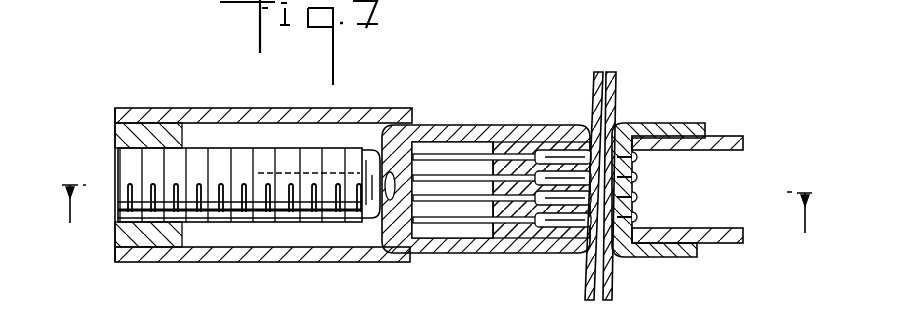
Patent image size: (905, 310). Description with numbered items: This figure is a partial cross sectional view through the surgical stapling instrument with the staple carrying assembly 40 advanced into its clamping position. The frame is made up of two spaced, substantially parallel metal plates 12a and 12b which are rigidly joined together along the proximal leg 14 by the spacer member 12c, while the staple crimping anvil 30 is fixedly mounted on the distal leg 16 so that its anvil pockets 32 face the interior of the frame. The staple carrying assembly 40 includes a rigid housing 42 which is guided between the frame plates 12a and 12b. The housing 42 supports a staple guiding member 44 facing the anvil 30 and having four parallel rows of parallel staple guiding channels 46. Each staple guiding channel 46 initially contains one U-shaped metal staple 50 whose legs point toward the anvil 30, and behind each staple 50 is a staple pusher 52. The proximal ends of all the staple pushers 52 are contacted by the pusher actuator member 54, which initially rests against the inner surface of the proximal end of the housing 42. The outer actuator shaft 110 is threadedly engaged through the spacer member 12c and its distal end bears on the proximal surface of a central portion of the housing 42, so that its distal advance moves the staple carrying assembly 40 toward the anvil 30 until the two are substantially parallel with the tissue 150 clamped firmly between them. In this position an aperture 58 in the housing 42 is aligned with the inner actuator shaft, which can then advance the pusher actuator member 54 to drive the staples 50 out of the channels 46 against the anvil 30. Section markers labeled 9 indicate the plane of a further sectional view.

The section line 9- 9 is at (437, 196).
The metal plate 12a is at (238, 115).
The metal plate 12b is at (223, 257).
The spacer member 12c is at (122, 235).
The proximal leg 14 is at (318, 268).
The distal leg 16 is at (762, 115).
The staple crimping anvil 30 is at (652, 257).
The anvil pockets 32 is at (635, 177).
The staple carrying assembly 40 is at (511, 255).
The housing 42 is at (457, 255).
The staple guiding member 44 is at (523, 237).
The staple guiding channels 46 is at (585, 217).
The staple 50 is at (558, 160).
The staple pusher 52 is at (460, 173).
The pusher actuator member 54 is at (428, 140).
The aperture 58 is at (363, 148).
The outer actuator shaft 110 is at (273, 218).
The tissue 150 is at (613, 85).